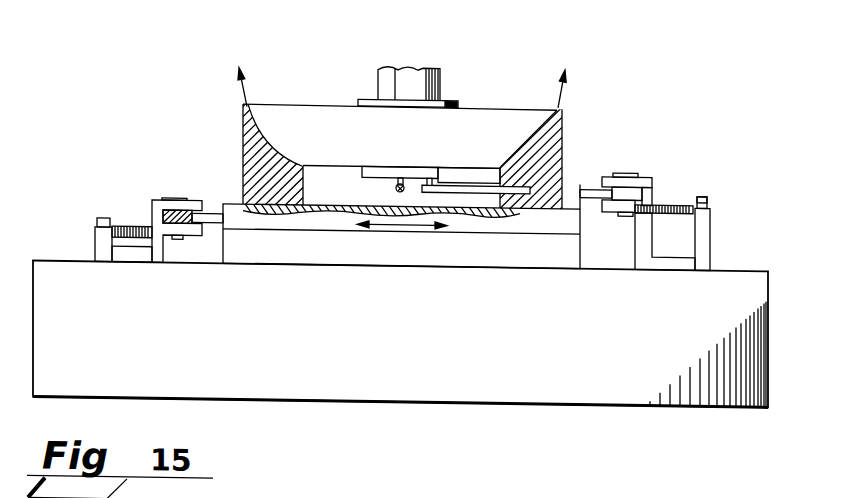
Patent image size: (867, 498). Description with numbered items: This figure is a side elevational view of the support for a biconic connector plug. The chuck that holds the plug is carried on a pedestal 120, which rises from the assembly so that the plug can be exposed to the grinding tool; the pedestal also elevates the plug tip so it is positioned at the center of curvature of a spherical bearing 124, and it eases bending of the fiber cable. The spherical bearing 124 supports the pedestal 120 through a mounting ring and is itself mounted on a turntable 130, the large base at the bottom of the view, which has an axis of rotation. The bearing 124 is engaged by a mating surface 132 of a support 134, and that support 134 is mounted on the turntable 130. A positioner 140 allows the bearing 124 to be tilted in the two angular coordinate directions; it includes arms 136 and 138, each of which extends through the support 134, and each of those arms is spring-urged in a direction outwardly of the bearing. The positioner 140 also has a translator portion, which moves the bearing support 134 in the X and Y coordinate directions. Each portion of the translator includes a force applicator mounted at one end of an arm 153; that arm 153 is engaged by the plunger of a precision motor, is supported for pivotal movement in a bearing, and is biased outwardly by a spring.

The pedestal 120 is at (440, 92).
The spherical bearing 124 is at (300, 100).
The turntable 130 is at (764, 287).
The mating surface 132 is at (535, 130).
The support 134 is at (558, 135).
The arm 136 is at (397, 184).
The arm 138 is at (460, 186).
The positioner 140 is at (679, 162).
The arm 153 is at (163, 213).